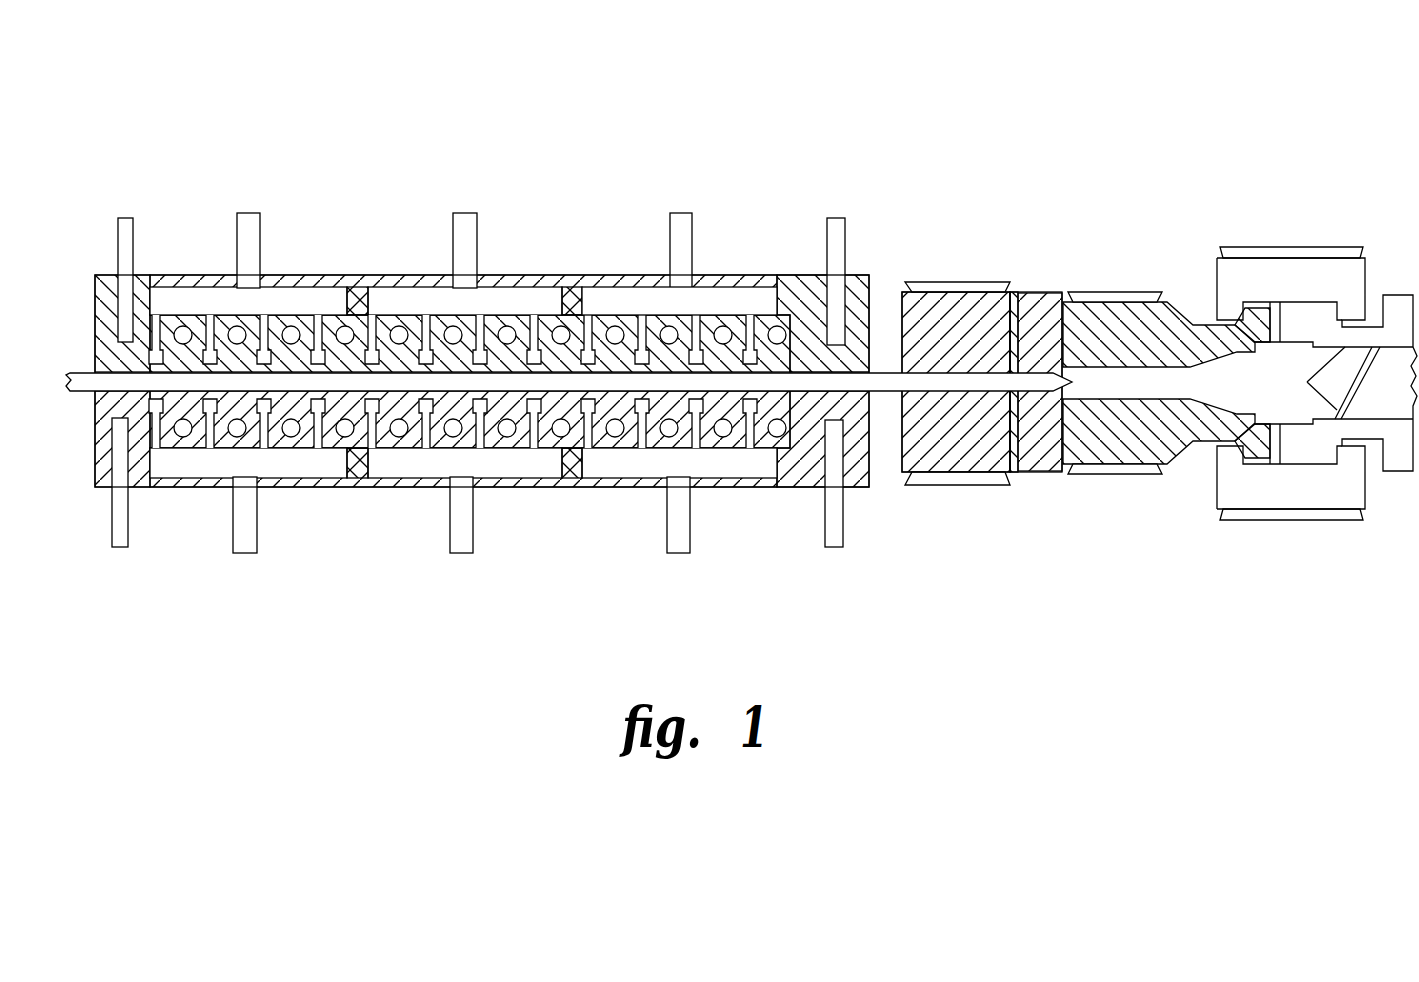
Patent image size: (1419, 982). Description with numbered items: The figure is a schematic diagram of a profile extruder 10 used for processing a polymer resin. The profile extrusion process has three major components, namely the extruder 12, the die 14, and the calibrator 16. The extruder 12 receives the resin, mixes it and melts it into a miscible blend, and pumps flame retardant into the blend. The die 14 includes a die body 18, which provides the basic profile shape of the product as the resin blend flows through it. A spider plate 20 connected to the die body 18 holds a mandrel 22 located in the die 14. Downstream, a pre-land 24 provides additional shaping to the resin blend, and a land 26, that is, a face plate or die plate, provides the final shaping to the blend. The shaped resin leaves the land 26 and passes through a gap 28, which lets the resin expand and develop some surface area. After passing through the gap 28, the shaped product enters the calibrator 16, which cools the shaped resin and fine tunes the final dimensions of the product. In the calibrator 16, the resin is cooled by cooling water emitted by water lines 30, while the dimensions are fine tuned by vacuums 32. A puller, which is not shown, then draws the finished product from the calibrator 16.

The profile extruder 10 is at (741, 360).
The extruder 12 is at (1268, 567).
The die 14 is at (965, 545).
The calibrator 16 is at (413, 582).
The die body 18 is at (1172, 458).
The spider plate 20 is at (1043, 474).
The mandrel 22 is at (1036, 362).
The pre-land 24 is at (1014, 297).
The land 26 is at (962, 300).
The gap 28 is at (888, 498).
The water lines 30 is at (777, 333).
The vacuums 32 is at (630, 302).